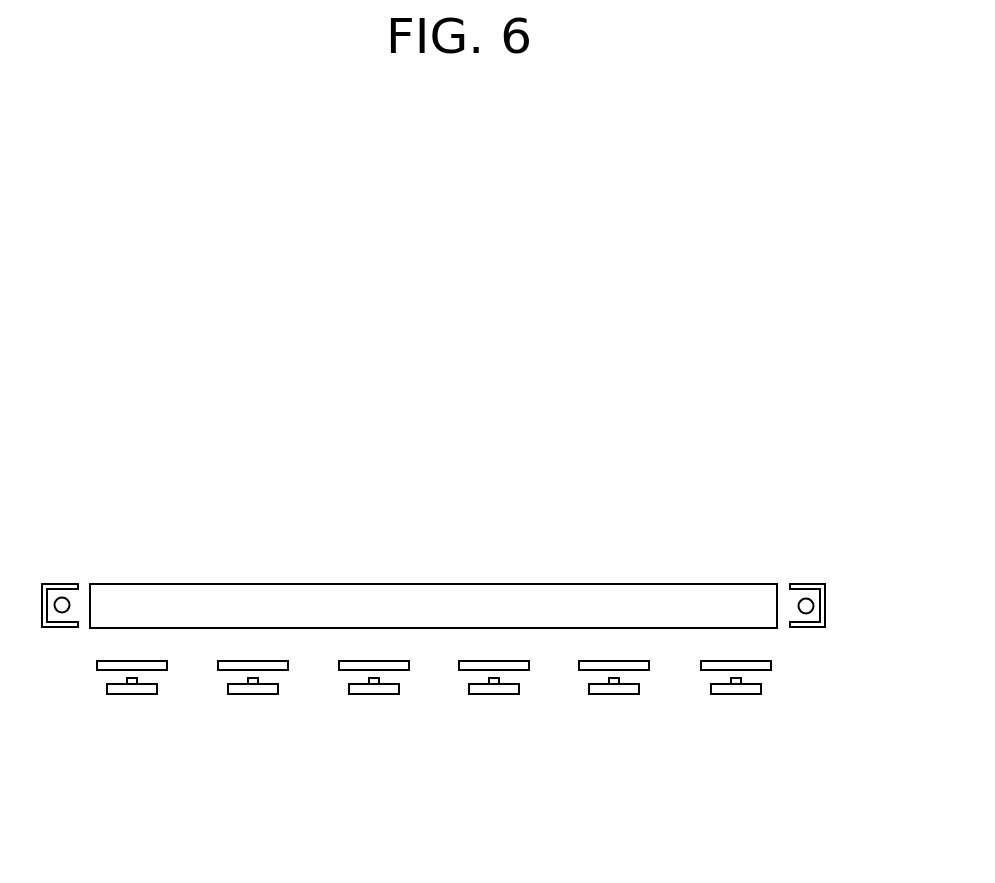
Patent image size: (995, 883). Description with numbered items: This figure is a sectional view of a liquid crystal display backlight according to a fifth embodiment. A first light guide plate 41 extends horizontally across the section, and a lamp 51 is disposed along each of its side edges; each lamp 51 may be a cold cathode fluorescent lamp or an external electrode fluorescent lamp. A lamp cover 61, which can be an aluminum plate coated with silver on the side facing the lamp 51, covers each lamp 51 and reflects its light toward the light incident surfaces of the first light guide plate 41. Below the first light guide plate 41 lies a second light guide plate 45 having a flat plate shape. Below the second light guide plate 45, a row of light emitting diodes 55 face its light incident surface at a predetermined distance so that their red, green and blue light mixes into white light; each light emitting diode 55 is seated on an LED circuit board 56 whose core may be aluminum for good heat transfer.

The first light guide plate 41 is at (136, 584).
The lamp cover 61 is at (823, 593).
The lamp 51 is at (812, 607).
The light emitting diode 55 is at (609, 680).
The LED circuit board 56 is at (632, 695).
The second light guide plate 45 is at (762, 669).